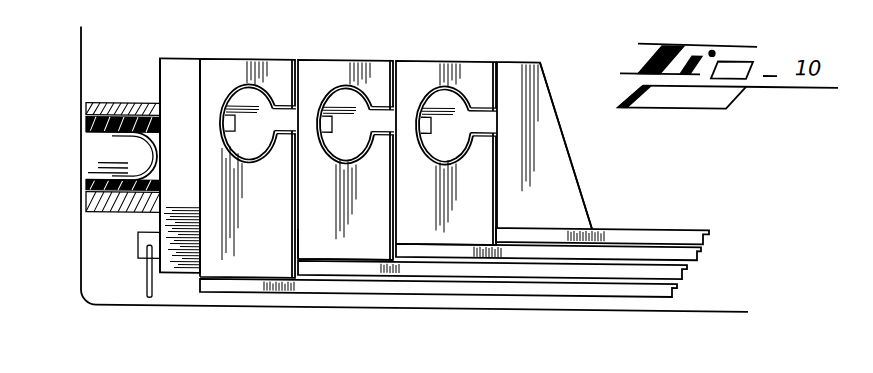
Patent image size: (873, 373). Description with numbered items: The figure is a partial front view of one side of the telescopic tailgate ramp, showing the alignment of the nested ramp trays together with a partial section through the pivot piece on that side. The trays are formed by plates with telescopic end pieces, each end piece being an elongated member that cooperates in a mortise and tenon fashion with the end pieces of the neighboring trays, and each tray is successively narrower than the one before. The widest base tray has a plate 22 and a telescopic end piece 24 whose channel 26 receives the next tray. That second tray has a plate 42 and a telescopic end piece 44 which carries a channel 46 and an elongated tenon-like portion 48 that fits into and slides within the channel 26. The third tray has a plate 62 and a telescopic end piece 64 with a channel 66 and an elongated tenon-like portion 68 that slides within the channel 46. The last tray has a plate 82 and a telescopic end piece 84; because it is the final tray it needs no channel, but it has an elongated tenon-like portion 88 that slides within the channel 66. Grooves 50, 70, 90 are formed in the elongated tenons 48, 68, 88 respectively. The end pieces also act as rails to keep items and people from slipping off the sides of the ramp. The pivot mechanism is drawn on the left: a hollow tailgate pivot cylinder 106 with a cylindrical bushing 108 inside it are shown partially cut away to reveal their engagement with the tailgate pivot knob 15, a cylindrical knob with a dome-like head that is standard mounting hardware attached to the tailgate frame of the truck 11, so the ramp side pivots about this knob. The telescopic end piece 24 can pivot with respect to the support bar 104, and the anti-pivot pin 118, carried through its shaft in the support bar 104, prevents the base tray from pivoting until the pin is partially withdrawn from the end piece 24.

The truck 11 is at (94, 310).
The tailgate pivot knob 15 is at (121, 156).
The plate 22 is at (228, 292).
The telescopic end piece 24 is at (173, 257).
The channel 26 is at (236, 104).
The plate 42 is at (422, 268).
The telescopic end piece 44 is at (328, 244).
The channel 46 is at (322, 101).
The elongated tenon-like portion 48 is at (228, 97).
The groove 50 is at (238, 128).
The plate 62 is at (552, 247).
The telescopic end piece 64 is at (481, 107).
The channel 66 is at (467, 87).
The elongated tenon-like portion 68 is at (336, 92).
The groove 70 is at (350, 164).
The plate 82 is at (669, 228).
The telescopic end piece 84 is at (525, 60).
The elongated tenon-like portion 88 is at (435, 88).
The groove 90 is at (474, 108).
The support bar 104 is at (173, 71).
The tailgate pivot cylinder 106 is at (110, 108).
The bushing 108 is at (84, 128).
The anti-pivot pin 118 is at (137, 245).